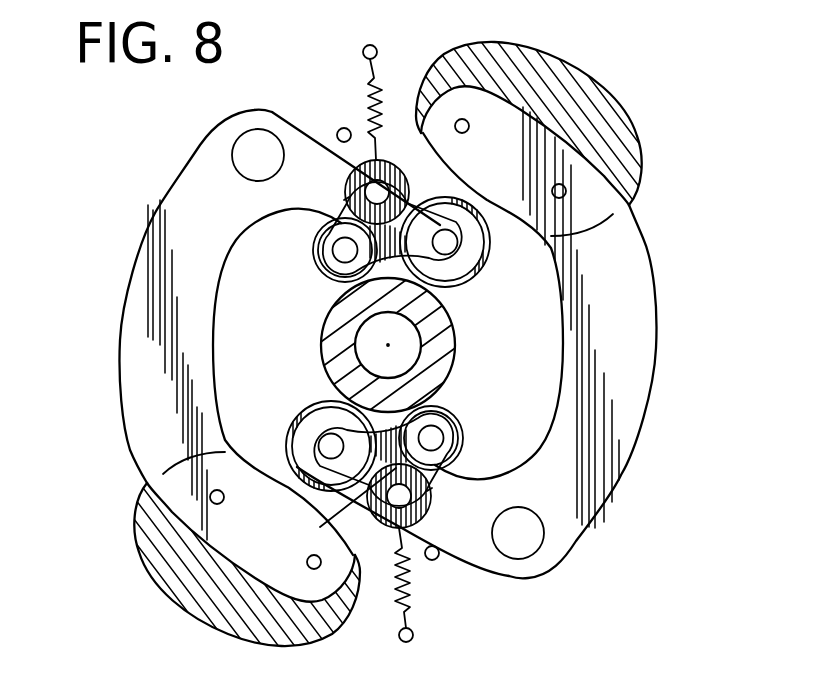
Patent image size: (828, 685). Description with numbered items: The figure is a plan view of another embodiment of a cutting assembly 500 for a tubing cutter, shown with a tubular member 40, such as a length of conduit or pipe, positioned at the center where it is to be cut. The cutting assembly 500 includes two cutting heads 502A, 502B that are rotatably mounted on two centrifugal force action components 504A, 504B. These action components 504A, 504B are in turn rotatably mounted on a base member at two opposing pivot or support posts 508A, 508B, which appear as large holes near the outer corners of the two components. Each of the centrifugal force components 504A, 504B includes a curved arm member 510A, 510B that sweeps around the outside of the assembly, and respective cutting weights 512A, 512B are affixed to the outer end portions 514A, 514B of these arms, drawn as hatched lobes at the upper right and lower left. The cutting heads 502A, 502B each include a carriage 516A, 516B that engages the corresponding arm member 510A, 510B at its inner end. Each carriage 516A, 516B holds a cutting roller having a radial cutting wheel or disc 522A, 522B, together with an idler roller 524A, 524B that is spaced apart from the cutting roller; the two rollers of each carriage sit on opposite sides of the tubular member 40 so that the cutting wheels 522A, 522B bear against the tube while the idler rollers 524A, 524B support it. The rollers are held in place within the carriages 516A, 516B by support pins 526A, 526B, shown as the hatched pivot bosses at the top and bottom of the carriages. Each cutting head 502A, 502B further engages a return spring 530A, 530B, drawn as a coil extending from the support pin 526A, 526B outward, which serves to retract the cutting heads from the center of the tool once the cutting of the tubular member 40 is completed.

The tubular member 40 is at (330, 345).
The cutting assembly 500 is at (132, 272).
The cutting head 502A is at (414, 195).
The cutting head 502B is at (449, 450).
The centrifugal force action component 504A is at (184, 178).
The centrifugal force action component 504B is at (621, 246).
The support post 508A is at (255, 154).
The support post 508B is at (540, 538).
The curved arm member 510A is at (137, 367).
The curved arm member 510B is at (641, 367).
The cutting weight 512A is at (188, 560).
The cutting weight 512B is at (617, 145).
The outer end portion 514A is at (247, 630).
The outer end portion 514B is at (456, 104).
The carriage 516A is at (333, 200).
The carriage 516B is at (323, 523).
The radial cutting wheel 522A is at (472, 272).
The radial cutting wheel 522B is at (310, 420).
The idler roller 524A is at (322, 251).
The idler roller 524B is at (443, 417).
The support pin 526A is at (369, 190).
The support pin 526B is at (405, 497).
The return spring 530A is at (366, 87).
The return spring 530B is at (408, 618).